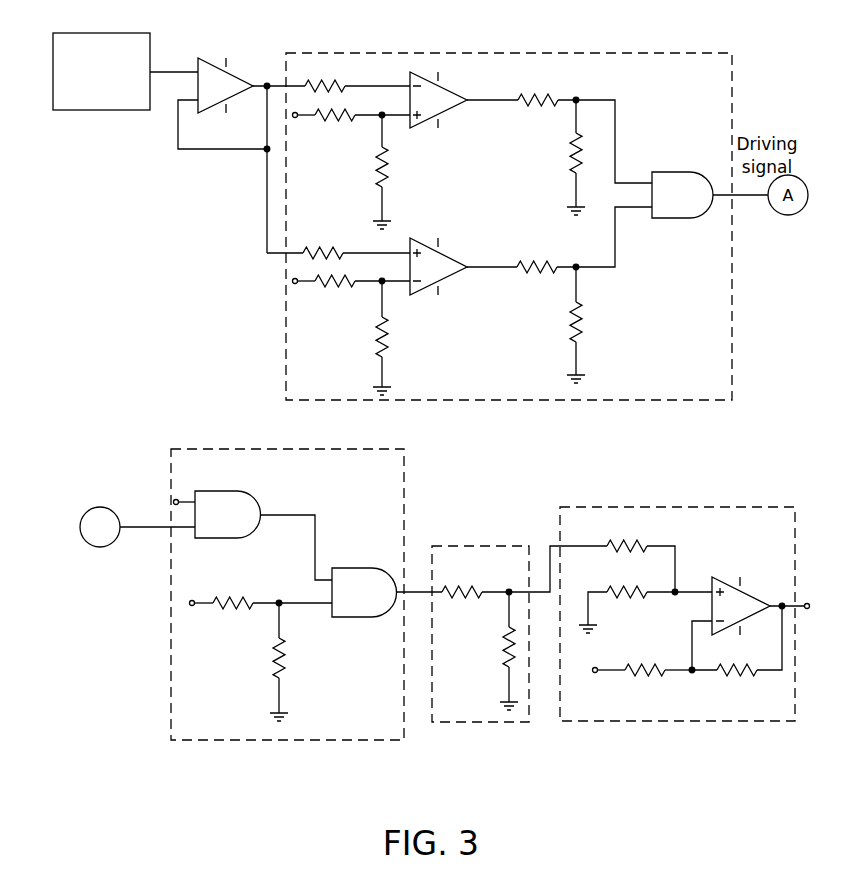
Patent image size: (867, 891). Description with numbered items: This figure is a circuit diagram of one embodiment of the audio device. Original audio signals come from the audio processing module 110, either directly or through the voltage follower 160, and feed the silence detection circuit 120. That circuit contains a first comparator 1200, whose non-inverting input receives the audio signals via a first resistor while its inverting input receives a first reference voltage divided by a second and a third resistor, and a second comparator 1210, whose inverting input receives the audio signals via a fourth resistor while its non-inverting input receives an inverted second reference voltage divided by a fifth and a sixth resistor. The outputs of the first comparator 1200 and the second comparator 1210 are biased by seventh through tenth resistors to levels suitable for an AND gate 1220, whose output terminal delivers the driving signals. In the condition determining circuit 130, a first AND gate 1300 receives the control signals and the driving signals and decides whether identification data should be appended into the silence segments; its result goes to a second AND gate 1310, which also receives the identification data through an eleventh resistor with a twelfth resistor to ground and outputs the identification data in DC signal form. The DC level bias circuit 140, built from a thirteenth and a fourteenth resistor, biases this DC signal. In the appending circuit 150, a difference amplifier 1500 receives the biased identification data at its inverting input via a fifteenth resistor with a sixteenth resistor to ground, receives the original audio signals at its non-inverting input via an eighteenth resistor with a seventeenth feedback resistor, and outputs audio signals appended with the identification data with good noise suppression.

The audio processing module 110 is at (103, 33).
The voltage follower 160 is at (205, 58).
The silence detection circuit 120 is at (507, 53).
The first comparator 1200 is at (450, 91).
The second comparator 1210 is at (450, 258).
The AND gate 1220 is at (663, 172).
The condition determining circuit 130 is at (275, 449).
The first AND gate 1300 is at (207, 491).
The second AND gate 1310 is at (343, 568).
The DC level bias circuit 140 is at (470, 546).
The appending circuit 150 is at (665, 507).
The difference amplifier 1500 is at (719, 577).